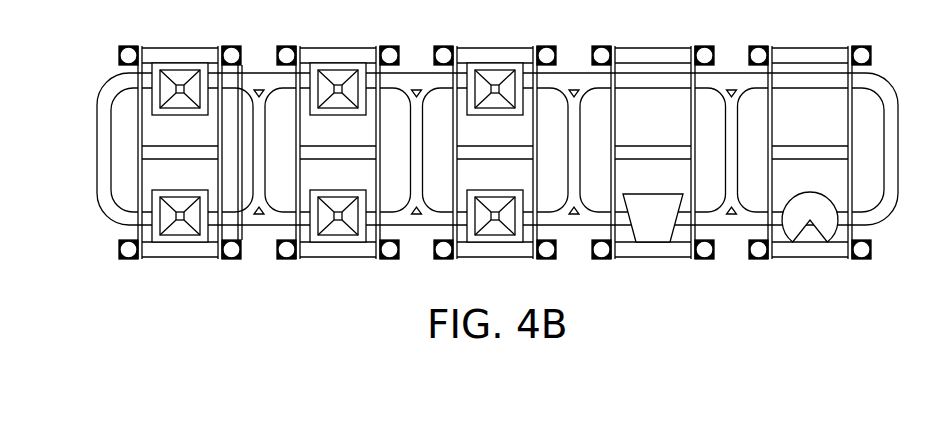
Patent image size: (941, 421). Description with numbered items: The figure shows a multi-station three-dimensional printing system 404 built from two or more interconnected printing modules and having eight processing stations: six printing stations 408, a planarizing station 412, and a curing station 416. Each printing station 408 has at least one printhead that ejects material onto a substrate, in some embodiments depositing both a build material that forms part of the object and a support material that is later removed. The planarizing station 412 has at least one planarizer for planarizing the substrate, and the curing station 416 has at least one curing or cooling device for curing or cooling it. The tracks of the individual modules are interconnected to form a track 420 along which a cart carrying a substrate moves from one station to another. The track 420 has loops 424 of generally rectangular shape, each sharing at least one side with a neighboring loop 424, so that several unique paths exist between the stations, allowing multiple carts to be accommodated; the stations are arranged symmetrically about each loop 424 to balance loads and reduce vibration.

The printing system 404 is at (101, 71).
The printing station 408 is at (186, 43).
The planarizing station 412 is at (659, 263).
The curing station 416 is at (824, 263).
The track 420 is at (884, 95).
The loop 424 is at (124, 189).